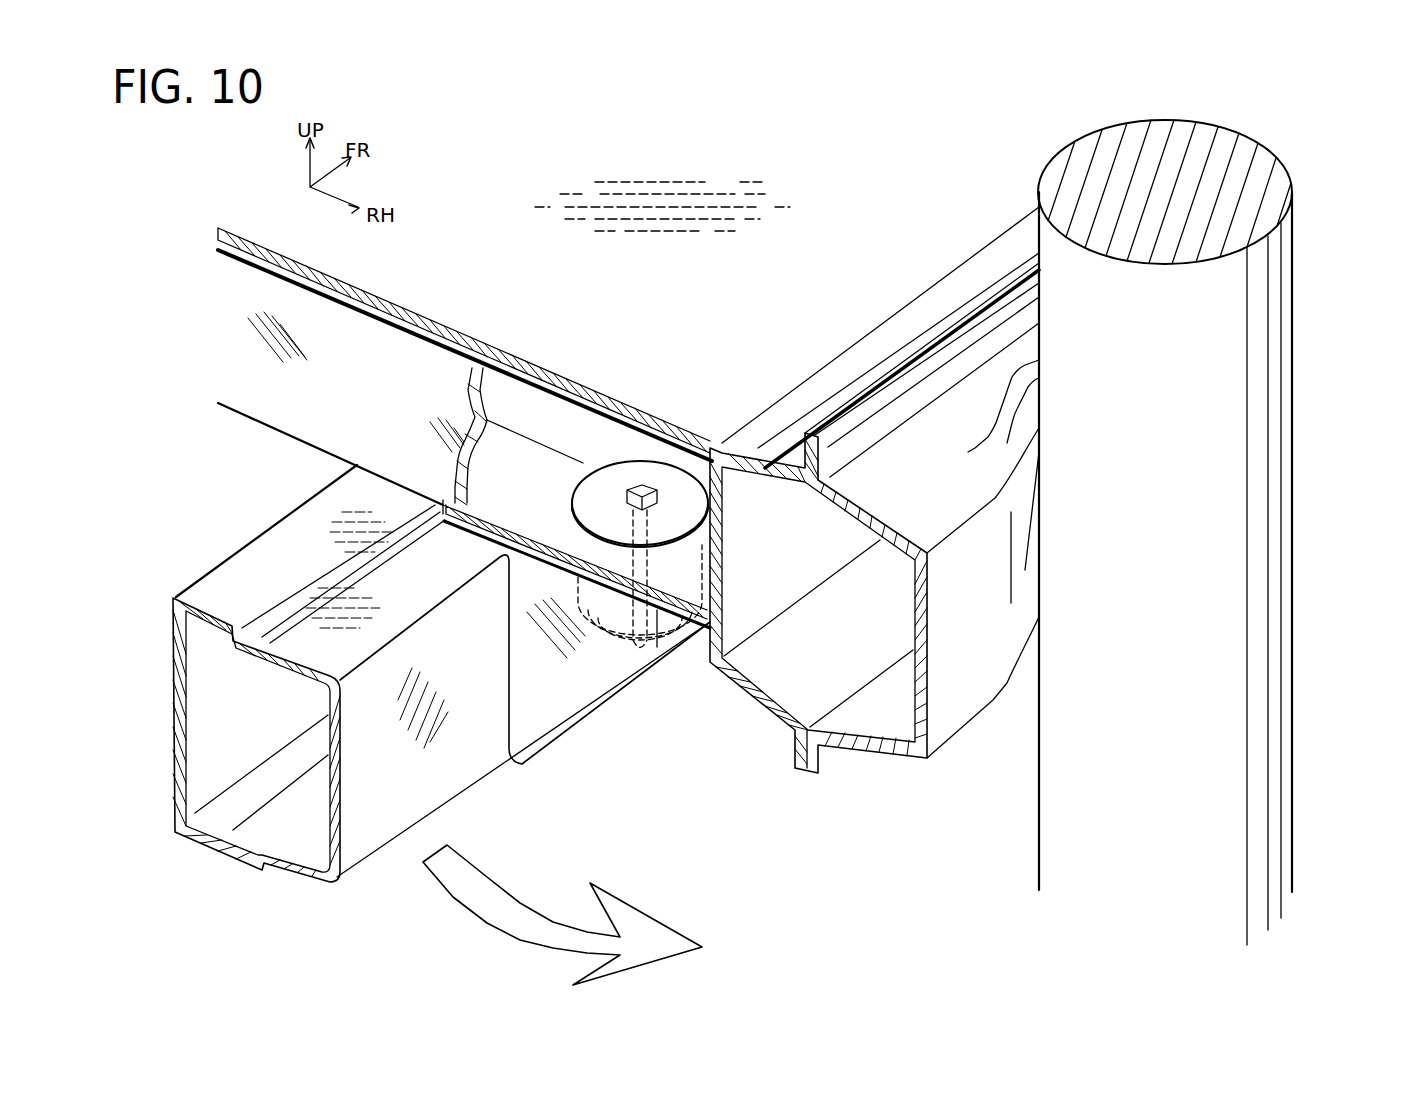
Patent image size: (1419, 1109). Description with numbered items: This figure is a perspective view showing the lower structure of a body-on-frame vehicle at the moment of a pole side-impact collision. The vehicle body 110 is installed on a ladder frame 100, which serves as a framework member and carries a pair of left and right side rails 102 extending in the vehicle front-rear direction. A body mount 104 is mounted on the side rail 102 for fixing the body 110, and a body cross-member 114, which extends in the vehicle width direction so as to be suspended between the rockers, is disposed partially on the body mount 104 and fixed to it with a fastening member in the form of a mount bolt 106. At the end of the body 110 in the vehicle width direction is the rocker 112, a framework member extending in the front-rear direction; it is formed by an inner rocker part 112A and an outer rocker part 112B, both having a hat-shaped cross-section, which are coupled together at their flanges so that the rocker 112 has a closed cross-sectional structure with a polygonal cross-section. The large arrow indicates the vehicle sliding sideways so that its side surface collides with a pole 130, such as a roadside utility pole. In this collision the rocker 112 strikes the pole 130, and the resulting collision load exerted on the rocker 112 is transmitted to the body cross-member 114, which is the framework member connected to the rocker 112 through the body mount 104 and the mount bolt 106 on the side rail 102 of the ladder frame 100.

The ladder frame 100 is at (479, 830).
The side rail 102 is at (283, 567).
The body mount 104 is at (543, 672).
The mount bolt 106 is at (639, 492).
The vehicle body 110 is at (866, 246).
The rocker 112 is at (810, 677).
The inner rocker part 112A is at (755, 700).
The outer rocker part 112B is at (872, 752).
The body cross-member 114 is at (384, 368).
The pole 130 is at (1205, 817).